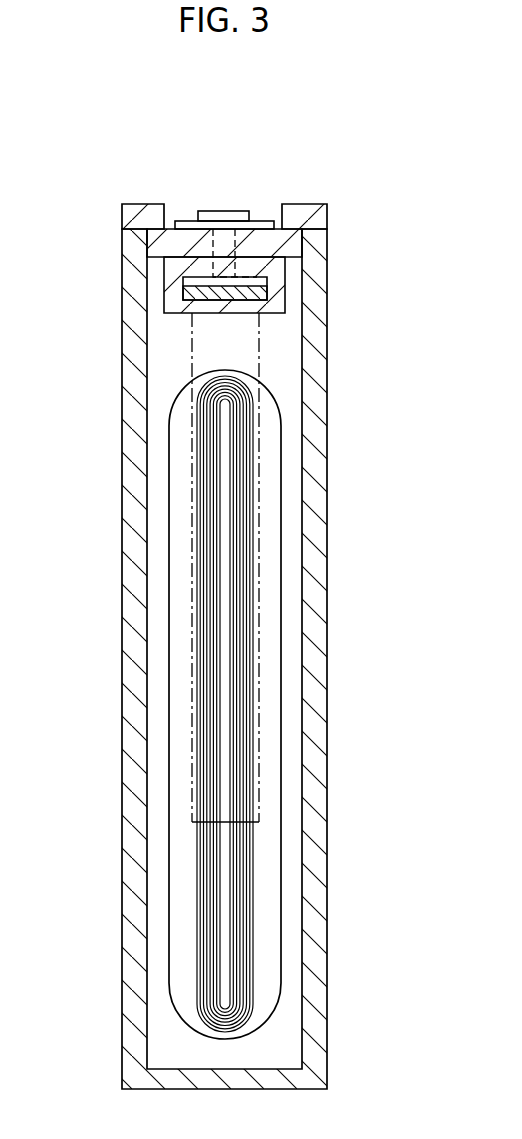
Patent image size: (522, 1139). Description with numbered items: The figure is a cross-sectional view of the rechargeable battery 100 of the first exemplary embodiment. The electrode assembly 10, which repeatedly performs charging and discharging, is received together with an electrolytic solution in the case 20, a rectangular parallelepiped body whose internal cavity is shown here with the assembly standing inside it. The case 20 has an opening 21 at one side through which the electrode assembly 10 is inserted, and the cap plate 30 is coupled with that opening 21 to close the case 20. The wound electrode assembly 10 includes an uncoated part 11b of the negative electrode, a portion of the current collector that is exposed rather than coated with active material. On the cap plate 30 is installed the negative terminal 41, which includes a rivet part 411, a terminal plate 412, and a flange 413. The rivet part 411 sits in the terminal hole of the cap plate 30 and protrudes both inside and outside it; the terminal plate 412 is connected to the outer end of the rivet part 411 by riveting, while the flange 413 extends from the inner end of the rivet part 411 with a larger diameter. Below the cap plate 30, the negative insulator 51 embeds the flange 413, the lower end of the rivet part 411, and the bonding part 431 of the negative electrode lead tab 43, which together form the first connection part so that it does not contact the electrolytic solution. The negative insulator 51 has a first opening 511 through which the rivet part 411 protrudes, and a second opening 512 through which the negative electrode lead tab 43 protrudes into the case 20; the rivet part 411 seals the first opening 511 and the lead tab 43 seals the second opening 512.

The rechargeable battery 100 is at (240, 121).
The electrode assembly 10 is at (270, 644).
The uncoated part 11b is at (220, 897).
The case 20 is at (322, 383).
The opening 21 is at (146, 204).
The cap plate 30 is at (295, 204).
The negative terminal 41 is at (252, 194).
The rivet part 411 is at (223, 263).
The terminal plate 412 is at (205, 211).
The flange 413 is at (186, 277).
The negative electrode lead tab 43 is at (217, 353).
The bonding part 431 is at (183, 296).
The negative insulator 51 is at (287, 276).
The first opening 511 is at (234, 262).
The second opening 512 is at (252, 322).